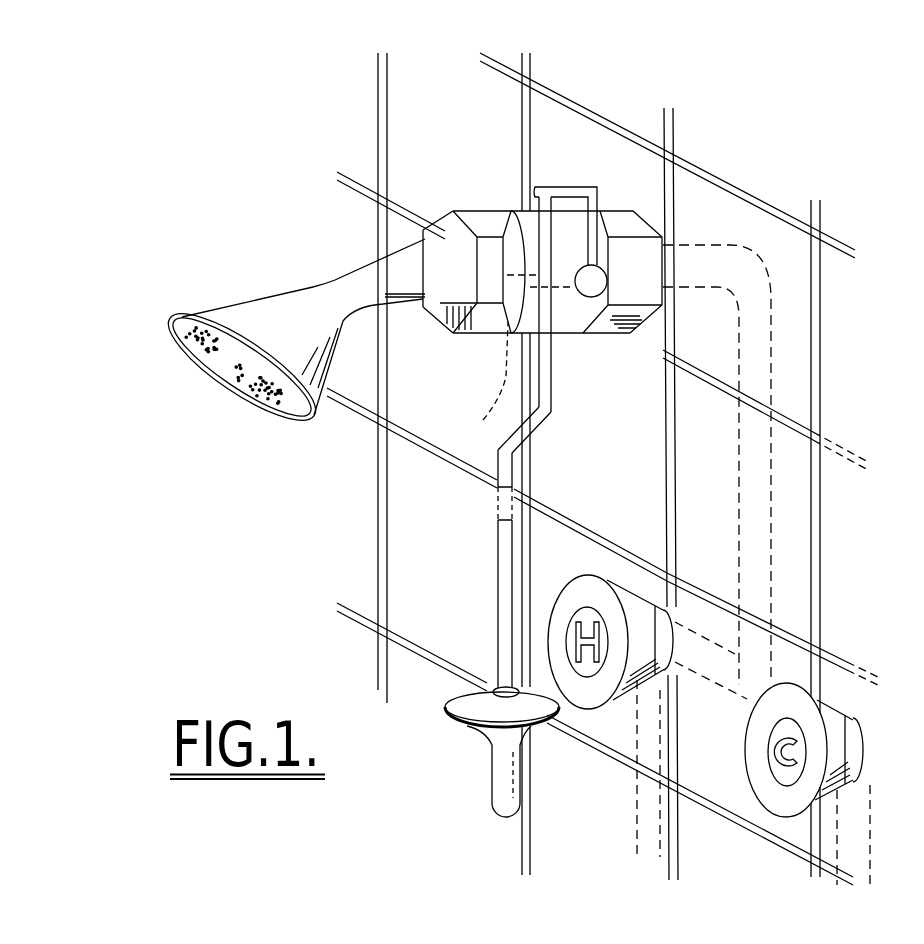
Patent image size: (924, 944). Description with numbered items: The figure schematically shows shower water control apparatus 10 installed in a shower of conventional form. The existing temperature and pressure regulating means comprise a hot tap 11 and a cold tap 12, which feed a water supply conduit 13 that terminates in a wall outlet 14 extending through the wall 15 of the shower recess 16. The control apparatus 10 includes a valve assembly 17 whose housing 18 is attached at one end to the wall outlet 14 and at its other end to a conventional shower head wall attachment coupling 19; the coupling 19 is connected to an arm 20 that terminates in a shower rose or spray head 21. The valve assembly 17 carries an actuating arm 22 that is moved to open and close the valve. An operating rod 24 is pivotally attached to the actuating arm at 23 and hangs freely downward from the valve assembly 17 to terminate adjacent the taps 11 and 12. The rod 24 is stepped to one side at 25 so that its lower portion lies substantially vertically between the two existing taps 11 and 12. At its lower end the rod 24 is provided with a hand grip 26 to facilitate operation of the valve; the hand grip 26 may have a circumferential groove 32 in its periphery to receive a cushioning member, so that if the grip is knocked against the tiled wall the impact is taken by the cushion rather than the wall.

The shower water control apparatus 10 is at (373, 508).
The hot tap 11 is at (628, 598).
The cold tap 12 is at (832, 710).
The water supply conduit 13 is at (755, 444).
The wall outlet 14 is at (673, 285).
The wall 15 is at (748, 228).
The shower recess 16 is at (668, 493).
The valve assembly 17 is at (562, 306).
The housing 18 is at (510, 208).
The shower head wall attachment coupling 19 is at (480, 313).
The arm 20 is at (413, 277).
The shower rose 21 is at (227, 323).
The actuating arm 22 is at (567, 274).
The pivot 23 is at (545, 192).
The operating rod 24 is at (475, 573).
The step 25 is at (568, 420).
The hand grip 26 is at (464, 693).
The circumferential groove 32 is at (467, 728).